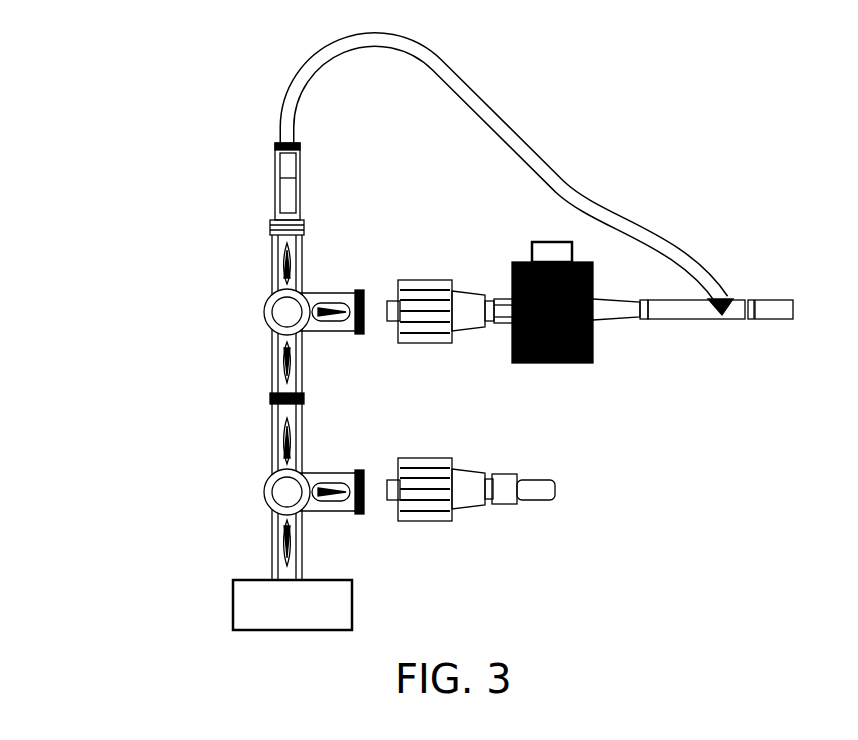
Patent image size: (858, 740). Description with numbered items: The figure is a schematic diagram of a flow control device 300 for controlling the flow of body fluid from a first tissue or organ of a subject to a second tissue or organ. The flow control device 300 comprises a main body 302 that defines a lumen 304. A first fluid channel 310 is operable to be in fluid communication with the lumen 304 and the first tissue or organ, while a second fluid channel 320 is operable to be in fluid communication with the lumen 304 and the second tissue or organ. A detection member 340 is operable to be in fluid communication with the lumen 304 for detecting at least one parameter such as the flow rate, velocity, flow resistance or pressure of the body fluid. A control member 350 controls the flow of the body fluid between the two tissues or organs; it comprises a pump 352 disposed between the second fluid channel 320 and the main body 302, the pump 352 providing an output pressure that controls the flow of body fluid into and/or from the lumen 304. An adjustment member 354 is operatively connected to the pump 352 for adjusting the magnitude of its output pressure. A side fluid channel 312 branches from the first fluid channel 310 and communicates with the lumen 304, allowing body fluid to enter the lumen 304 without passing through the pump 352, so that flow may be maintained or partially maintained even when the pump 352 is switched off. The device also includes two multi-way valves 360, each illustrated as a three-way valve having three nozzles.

The flow control device 300 is at (184, 47).
The main body 302 is at (280, 408).
The lumen 304 is at (287, 413).
The first fluid channel 310 is at (541, 490).
The side fluid channel 312 is at (485, 107).
The second fluid channel 320 is at (777, 310).
The detection member 340 is at (248, 604).
The control member 350 is at (579, 269).
The pump 352 is at (520, 263).
The adjustment member 354 is at (557, 256).
The multi-way valve 360 is at (270, 311).